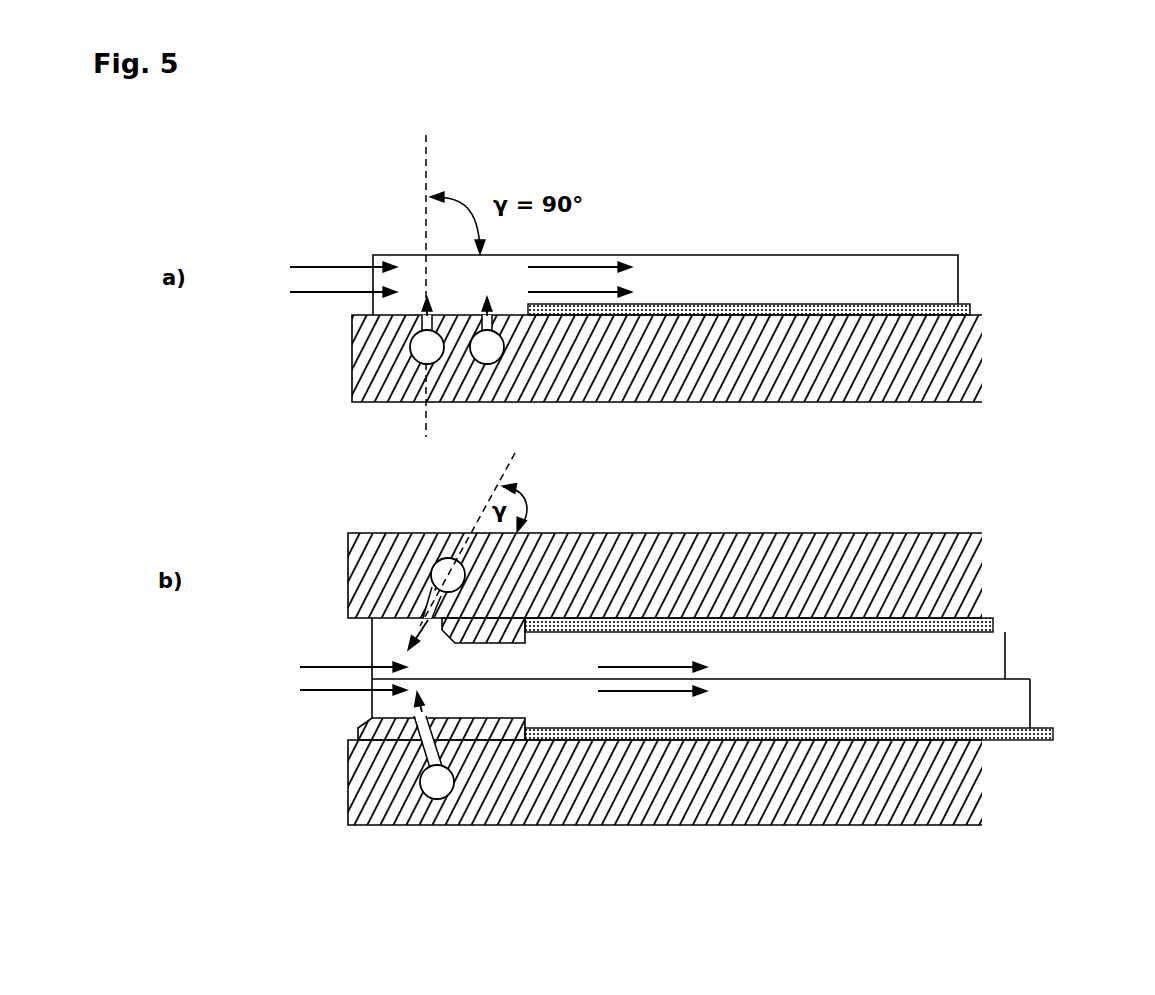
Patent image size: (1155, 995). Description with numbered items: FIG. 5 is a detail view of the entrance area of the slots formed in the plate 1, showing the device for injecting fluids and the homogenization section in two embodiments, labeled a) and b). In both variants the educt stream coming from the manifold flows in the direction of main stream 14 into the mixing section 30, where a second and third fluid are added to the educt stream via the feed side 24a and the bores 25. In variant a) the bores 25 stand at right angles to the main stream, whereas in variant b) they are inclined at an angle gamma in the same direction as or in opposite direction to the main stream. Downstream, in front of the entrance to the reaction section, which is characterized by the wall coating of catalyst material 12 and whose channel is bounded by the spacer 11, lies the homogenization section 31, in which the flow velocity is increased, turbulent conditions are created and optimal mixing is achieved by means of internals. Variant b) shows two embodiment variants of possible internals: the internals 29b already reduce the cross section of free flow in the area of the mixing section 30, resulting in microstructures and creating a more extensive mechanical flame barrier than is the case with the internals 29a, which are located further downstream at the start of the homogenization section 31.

The plate 1 is at (960, 583).
The spacer 11 is at (995, 700).
The catalyst material 12 is at (773, 623).
The direction of main stream 14 is at (617, 480).
The feed side fluid 2/fluid 3 24a is at (350, 809).
The bores 25 is at (430, 600).
The internals 29a is at (567, 568).
The internals 29b is at (359, 773).
The mixing section 30 is at (379, 246).
The homogenization section 31 is at (701, 778).